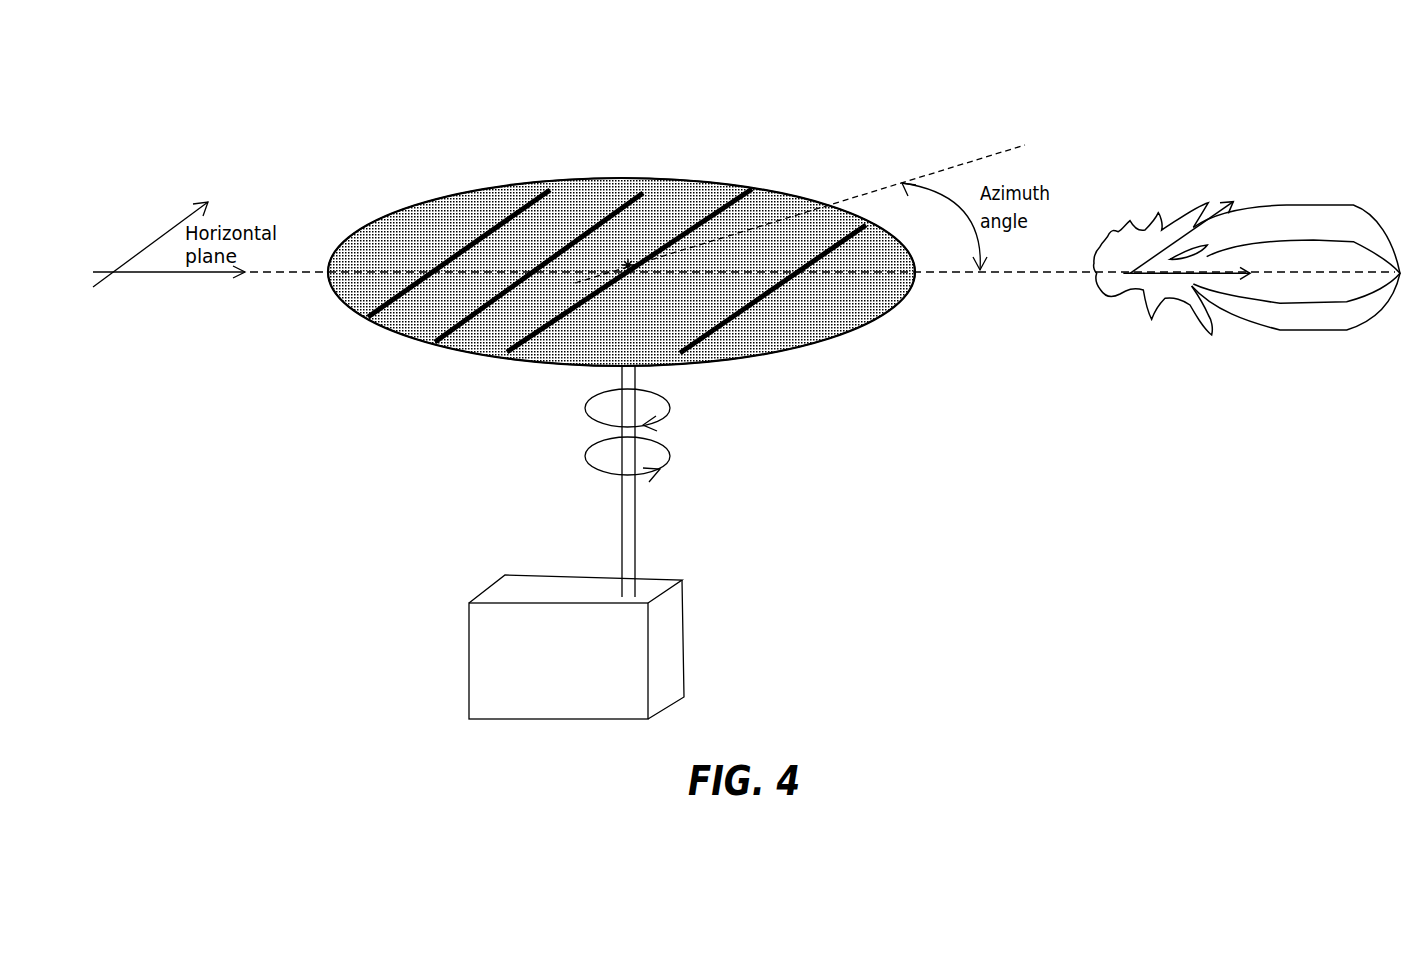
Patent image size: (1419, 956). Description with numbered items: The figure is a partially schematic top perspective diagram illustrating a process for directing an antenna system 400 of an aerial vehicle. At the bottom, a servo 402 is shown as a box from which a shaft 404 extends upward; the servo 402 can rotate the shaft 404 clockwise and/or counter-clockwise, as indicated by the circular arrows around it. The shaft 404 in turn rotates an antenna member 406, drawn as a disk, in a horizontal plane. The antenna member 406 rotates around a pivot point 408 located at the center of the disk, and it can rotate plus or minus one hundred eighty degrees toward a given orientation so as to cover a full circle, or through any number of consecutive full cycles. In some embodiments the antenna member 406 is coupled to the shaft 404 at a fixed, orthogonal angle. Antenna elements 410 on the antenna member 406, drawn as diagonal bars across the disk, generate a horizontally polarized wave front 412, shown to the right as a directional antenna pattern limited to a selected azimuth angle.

The antenna system 400 is at (214, 112).
The servo 402 is at (578, 666).
The shaft 404 is at (622, 548).
The antenna member 406 is at (472, 190).
The pivot point 408 is at (634, 256).
The antenna elements 410 is at (437, 343).
The wave front 412 is at (1347, 215).